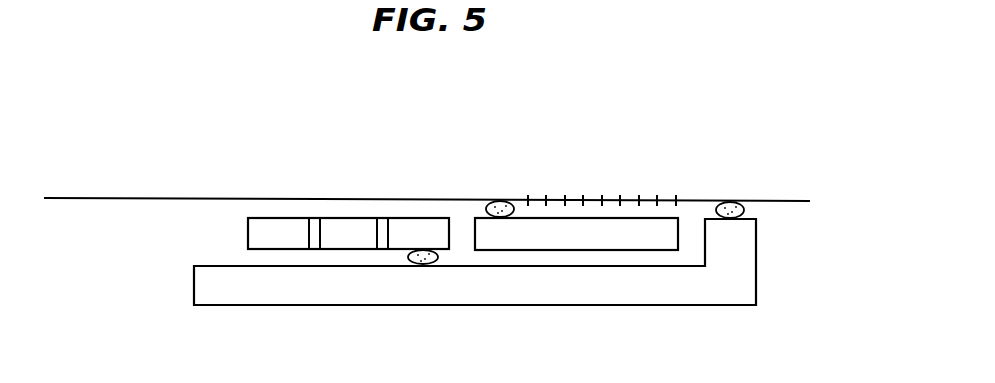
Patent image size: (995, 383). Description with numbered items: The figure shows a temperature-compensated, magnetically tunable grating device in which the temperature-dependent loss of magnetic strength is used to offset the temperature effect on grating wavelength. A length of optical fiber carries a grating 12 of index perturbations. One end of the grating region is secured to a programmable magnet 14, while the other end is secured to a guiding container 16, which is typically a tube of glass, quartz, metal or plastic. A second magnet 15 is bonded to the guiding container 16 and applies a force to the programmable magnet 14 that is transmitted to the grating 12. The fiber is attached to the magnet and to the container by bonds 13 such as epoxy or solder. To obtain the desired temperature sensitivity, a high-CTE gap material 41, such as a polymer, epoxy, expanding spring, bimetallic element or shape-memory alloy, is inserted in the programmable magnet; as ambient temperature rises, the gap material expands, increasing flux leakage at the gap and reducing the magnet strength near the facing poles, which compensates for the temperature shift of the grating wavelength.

The high-CTE gap material 41 is at (380, 217).
The second magnet 15 is at (443, 217).
The programmable magnet 14 is at (522, 212).
The grating 12 is at (641, 199).
The bonds 13 is at (745, 207).
The guiding container 16 is at (756, 280).